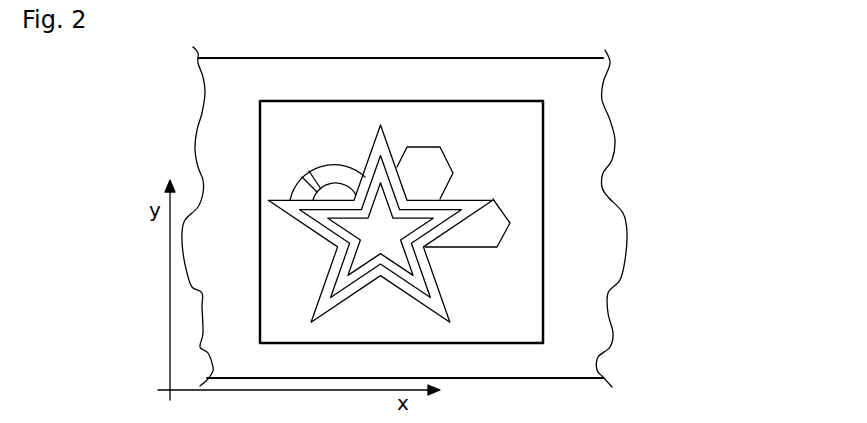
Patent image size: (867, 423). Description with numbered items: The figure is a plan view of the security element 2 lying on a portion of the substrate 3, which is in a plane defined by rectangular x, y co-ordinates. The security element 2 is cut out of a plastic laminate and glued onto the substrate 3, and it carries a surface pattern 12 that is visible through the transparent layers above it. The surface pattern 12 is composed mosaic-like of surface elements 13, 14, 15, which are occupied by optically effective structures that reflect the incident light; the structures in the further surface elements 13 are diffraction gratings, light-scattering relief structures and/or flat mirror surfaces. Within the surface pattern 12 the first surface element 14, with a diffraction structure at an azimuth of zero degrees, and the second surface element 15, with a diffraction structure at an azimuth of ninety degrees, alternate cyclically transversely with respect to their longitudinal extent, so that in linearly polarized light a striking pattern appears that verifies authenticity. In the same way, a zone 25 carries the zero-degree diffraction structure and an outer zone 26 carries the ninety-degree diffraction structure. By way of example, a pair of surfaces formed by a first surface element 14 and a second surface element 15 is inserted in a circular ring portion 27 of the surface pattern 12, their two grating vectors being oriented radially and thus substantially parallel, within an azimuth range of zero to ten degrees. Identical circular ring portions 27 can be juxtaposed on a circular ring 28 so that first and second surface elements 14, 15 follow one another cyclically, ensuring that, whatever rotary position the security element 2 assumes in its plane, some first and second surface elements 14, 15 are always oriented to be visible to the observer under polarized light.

The security element 2 is at (543, 158).
The substrate 3 is at (509, 88).
The surface pattern 12 is at (348, 147).
The further surface elements 13 is at (433, 177).
The first surface element 14 is at (397, 223).
The second surface element 15 is at (418, 282).
The zone 25 is at (440, 303).
The outer zone 26 is at (523, 144).
The circular ring portion 27 is at (312, 185).
The circular ring 28 is at (325, 167).